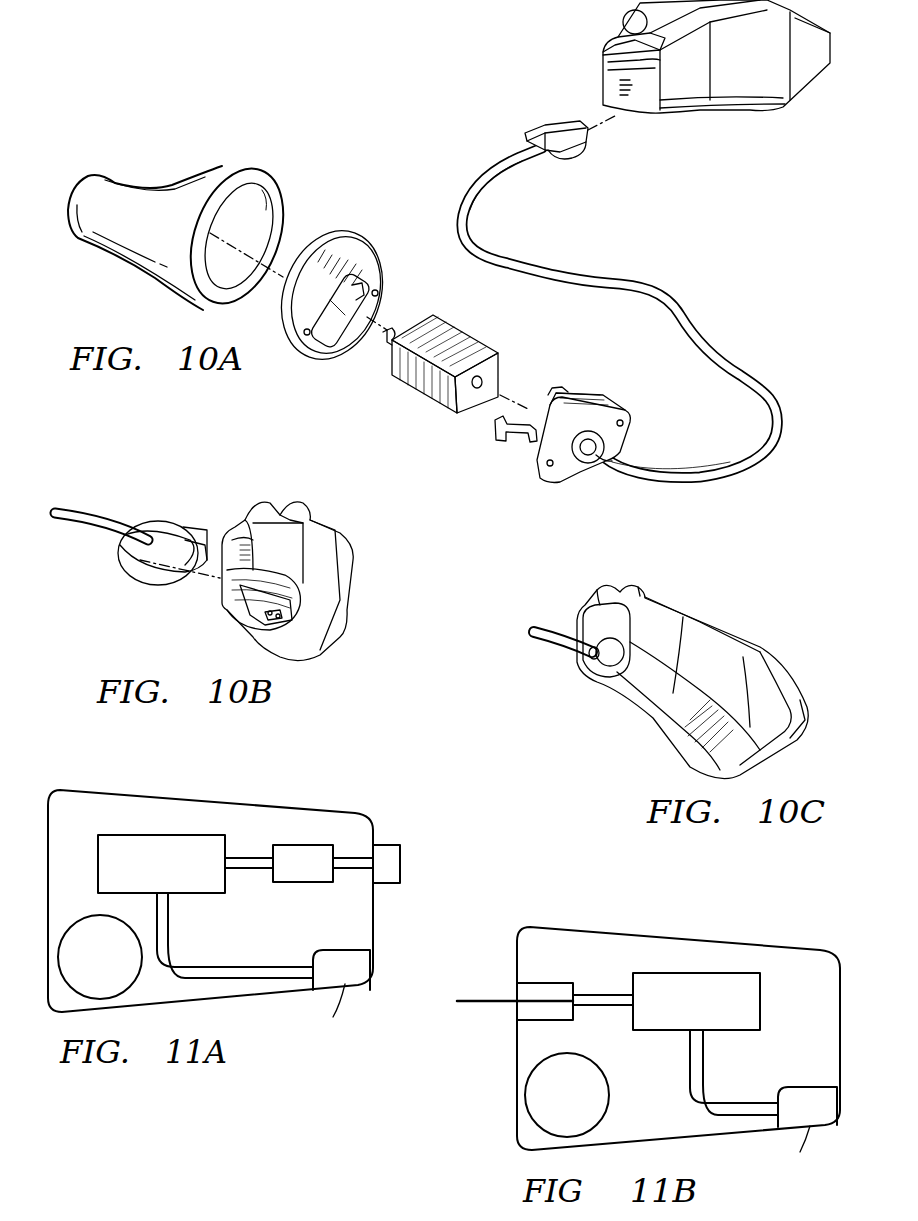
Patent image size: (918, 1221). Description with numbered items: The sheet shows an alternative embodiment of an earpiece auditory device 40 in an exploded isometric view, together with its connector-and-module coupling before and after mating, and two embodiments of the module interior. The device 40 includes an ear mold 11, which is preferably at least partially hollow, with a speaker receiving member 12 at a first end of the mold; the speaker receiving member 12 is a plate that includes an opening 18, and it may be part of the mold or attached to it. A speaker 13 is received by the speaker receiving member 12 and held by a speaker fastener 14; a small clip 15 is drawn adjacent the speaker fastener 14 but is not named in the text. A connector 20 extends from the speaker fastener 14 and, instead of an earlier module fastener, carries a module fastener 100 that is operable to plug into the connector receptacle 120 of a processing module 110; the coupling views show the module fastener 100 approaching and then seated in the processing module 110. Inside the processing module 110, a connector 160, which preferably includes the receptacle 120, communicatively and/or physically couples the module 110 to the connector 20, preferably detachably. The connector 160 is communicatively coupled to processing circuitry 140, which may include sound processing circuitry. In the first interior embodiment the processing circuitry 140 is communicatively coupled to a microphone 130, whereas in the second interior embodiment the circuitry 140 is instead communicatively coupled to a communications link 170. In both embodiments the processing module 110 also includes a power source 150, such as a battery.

In FIG. 10A, the ear mold 11 is at (142, 262).
In FIG. 10A, the speaker receiving member 12 is at (383, 281).
In FIG. 10A, the speaker 13 is at (430, 390).
In FIG. 10A, the speaker fastener 14 is at (612, 468).
In FIG. 10A, the retaining clip 15 is at (510, 437).
In FIG. 10A, the opening 18 is at (337, 346).
In FIG. 10A, the connector 20 is at (447, 184).
In FIG. 10A, the earpiece auditory device 40 is at (300, 84).
In FIG. 10A, the module fastener 100 is at (540, 132).
In FIG. 10B, the module fastener 100 is at (130, 571).
In FIG. 10C, the module fastener 100 is at (587, 670).
In FIG. 10A, the processing module 110 is at (735, 115).
In FIG. 10B, the processing module 110 is at (237, 527).
In FIG. 10C, the processing module 110 is at (757, 641).
In FIG. 10B, the connector receptacle 120 is at (256, 637).
In FIG. 11A, the microphone 130 is at (300, 883).
In FIG. 11A, the processing circuitry 140 is at (228, 843).
In FIG. 11B, the processing circuitry 140 is at (763, 996).
In FIG. 11A, the power source 150 is at (95, 918).
In FIG. 11B, the power source 150 is at (610, 1095).
In FIG. 11A, the connector 160 is at (340, 950).
In FIG. 11B, the connector 160 is at (808, 1087).
In FIG. 11B, the communications link 170 is at (483, 998).